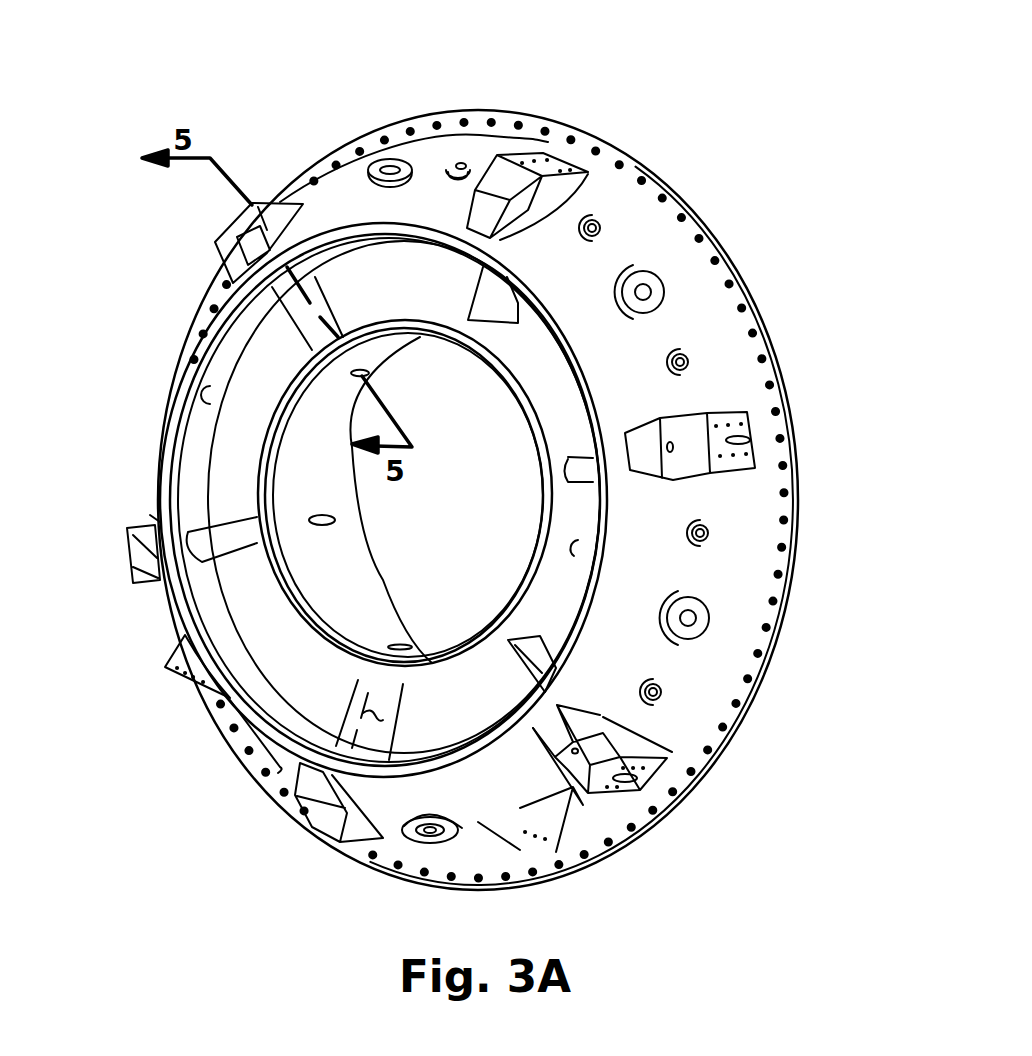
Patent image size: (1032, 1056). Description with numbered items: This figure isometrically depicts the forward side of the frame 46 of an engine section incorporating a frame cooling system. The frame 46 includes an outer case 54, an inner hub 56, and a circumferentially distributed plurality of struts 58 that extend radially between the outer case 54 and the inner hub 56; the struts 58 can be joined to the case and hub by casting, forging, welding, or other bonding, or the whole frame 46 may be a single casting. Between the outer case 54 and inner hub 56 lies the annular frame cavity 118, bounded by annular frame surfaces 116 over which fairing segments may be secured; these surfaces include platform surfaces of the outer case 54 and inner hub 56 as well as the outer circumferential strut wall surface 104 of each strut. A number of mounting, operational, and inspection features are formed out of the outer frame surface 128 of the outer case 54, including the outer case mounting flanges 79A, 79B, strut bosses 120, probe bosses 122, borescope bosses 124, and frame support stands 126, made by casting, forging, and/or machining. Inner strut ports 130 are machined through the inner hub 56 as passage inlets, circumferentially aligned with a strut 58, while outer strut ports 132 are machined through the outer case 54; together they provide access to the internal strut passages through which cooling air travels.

The frame 46 is at (762, 95).
The outer case 54 is at (647, 231).
The inner hub 56 is at (315, 571).
The struts 58 is at (468, 286).
The outer case mounting flange 79A is at (158, 470).
The outer case mounting flange 79B is at (490, 118).
The circumferential strut wall surface 104 is at (365, 715).
The annular frame surfaces 116 is at (215, 398).
The annular frame cavity 118 is at (250, 453).
The strut bosses 120 is at (566, 152).
The probe bosses 122 is at (708, 628).
The borescope bosses 124 is at (602, 224).
The frame support stands 126 is at (165, 667).
The outer frame surface 128 is at (600, 364).
The inner strut ports 130 is at (370, 373).
The outer strut ports 132 is at (752, 440).